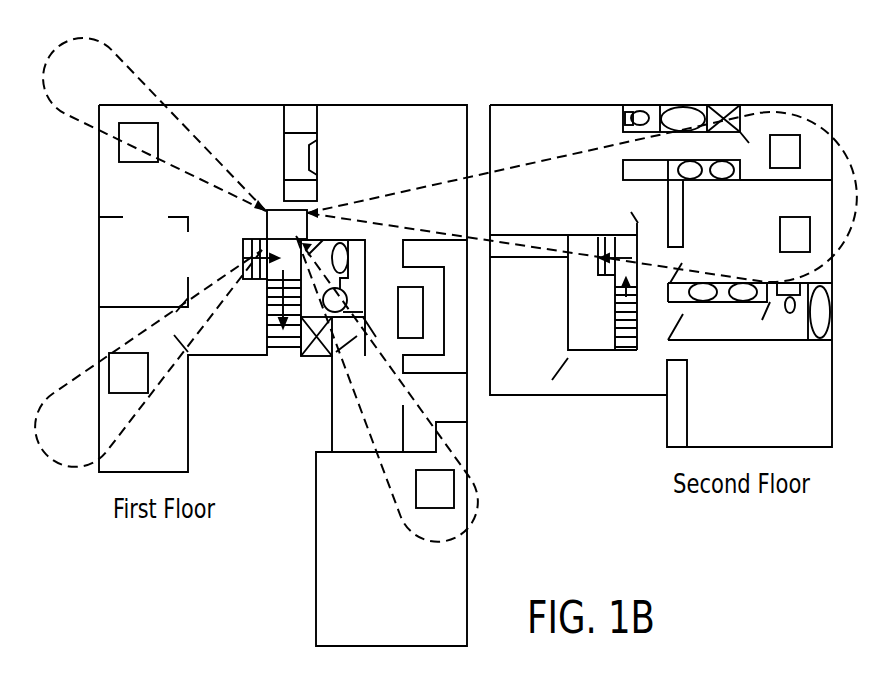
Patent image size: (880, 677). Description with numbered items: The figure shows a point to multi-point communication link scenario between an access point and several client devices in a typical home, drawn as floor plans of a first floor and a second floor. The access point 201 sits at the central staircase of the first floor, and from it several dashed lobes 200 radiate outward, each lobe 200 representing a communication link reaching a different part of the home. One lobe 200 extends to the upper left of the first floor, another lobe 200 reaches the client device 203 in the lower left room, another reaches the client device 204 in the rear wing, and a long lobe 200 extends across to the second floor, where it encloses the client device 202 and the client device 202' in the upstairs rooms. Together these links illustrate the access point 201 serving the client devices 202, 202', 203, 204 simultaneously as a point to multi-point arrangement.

The wireless coverage area 200 is at (192, 137).
The wireless access point / hub at staircase 201 is at (266, 222).
The wireless device (second floor) 202 is at (759, 231).
The wireless device (second floor, alternate) 202' is at (792, 118).
The wireless device (first floor) 203 is at (138, 380).
The wireless device (first floor, rear) 204 is at (454, 490).